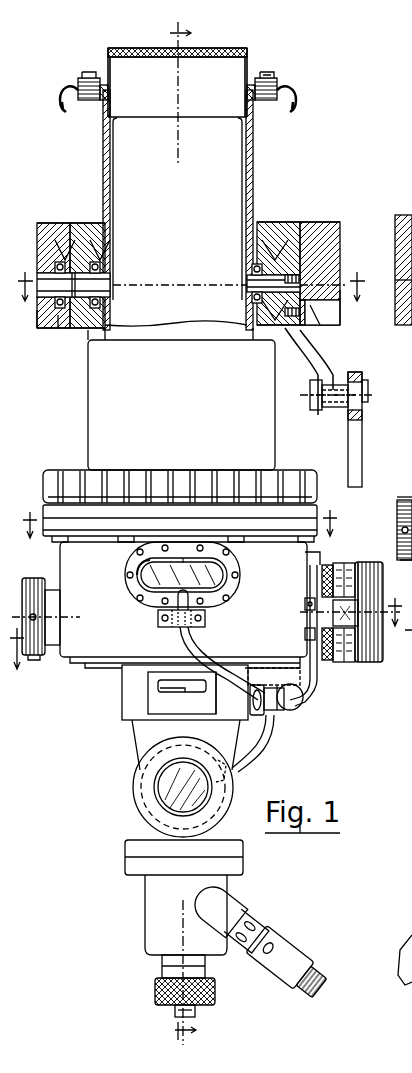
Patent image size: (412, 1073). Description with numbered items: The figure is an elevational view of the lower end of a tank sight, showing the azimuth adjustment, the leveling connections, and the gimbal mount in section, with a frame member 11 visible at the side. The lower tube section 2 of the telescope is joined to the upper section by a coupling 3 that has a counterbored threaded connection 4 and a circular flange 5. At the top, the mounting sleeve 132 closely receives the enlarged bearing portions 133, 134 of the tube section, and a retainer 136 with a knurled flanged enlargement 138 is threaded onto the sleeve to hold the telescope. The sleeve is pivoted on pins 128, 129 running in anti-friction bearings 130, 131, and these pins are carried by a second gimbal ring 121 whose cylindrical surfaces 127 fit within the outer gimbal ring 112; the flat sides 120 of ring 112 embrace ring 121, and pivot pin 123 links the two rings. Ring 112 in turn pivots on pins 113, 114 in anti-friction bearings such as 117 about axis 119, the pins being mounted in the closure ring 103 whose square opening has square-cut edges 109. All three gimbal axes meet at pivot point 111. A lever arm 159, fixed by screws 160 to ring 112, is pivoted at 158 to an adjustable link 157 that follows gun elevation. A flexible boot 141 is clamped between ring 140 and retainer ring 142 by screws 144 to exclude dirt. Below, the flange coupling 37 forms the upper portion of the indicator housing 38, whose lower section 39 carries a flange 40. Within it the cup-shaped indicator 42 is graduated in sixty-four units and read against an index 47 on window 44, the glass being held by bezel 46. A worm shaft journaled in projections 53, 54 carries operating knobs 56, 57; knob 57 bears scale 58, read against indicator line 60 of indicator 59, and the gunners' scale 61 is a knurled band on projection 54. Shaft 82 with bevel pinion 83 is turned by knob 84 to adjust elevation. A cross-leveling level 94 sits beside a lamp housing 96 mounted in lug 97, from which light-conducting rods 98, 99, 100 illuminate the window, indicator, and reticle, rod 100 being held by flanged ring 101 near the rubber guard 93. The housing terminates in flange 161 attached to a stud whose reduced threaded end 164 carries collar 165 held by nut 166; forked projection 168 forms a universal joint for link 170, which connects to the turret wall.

The lower tube section 2 is at (92, 147).
The coupling 3 is at (126, 48).
The counterbored threaded connection 4 is at (181, 524).
The circular flange 5 is at (210, 637).
The frame member 11 is at (403, 311).
The flange coupling 37 is at (318, 510).
The indicator housing 38 is at (91, 672).
The lower housing section 39 is at (62, 558).
The flange 40 is at (317, 535).
The cup-shaped indicator 42 is at (222, 574).
The window 44 is at (136, 592).
The bezel 46 is at (128, 565).
The index 47 is at (184, 558).
The tangential projection 53 is at (55, 606).
The tangential projection 54 is at (314, 567).
The operating knob 56 is at (36, 655).
The operating knob 57 is at (376, 662).
The scale 58 is at (345, 660).
The indicator 59 is at (306, 600).
The indicator line 60 is at (358, 600).
The gunners' scale 61 is at (326, 660).
The shaft 82 is at (405, 595).
The bevel pinion 83 is at (401, 490).
The knob 84 is at (397, 526).
The rubber guard 93 is at (138, 810).
The cross-leveling bubble tube level 94 is at (160, 705).
The lamp housing 96 is at (280, 712).
The lug 97 is at (232, 705).
The light-conducting rod 98 is at (198, 648).
The light-conducting rod 99 is at (317, 688).
The light-conducting rod 100 is at (263, 746).
The flanged ring 101 is at (228, 776).
The closure ring 103 is at (315, 222).
The square-cut side edge 109 is at (50, 223).
The pivot point 111 is at (186, 280).
The gimbal ring 112 is at (65, 330).
The pivot pin 113 is at (45, 326).
The pivot pin 114 is at (340, 308).
The anti-friction bearing 117 is at (42, 245).
The axis 119 is at (146, 283).
The flat side 120 is at (398, 260).
The second gimbal ring 121 is at (276, 222).
The pivot pin 123 is at (345, 280).
The cylindrical surface 127 is at (90, 223).
The pin 128 is at (112, 283).
The pin 129 is at (250, 286).
The anti-friction bearing 130 is at (100, 330).
The anti-friction bearing 131 is at (254, 328).
The telescope mounting sleeve 132 is at (256, 152).
The bearing portion 133 is at (252, 116).
The bearing portion 134 is at (171, 328).
The retainer 136 is at (88, 414).
The knurled flanged enlargement 138 is at (188, 478).
The ring 140 is at (80, 102).
The flexible boot 141 is at (66, 96).
The retainer ring 142 is at (288, 85).
The screw 144 is at (268, 76).
The adjustable link 157 is at (350, 452).
The pivot 158 is at (315, 415).
The lever arm 159 is at (333, 362).
The screw 160 is at (318, 316).
The flange 161 is at (243, 851).
The reduced threaded end 164 is at (198, 1010).
The collar 165 is at (148, 918).
The nut 166 is at (156, 998).
The forked projection 168 is at (232, 907).
The link 170 is at (396, 975).